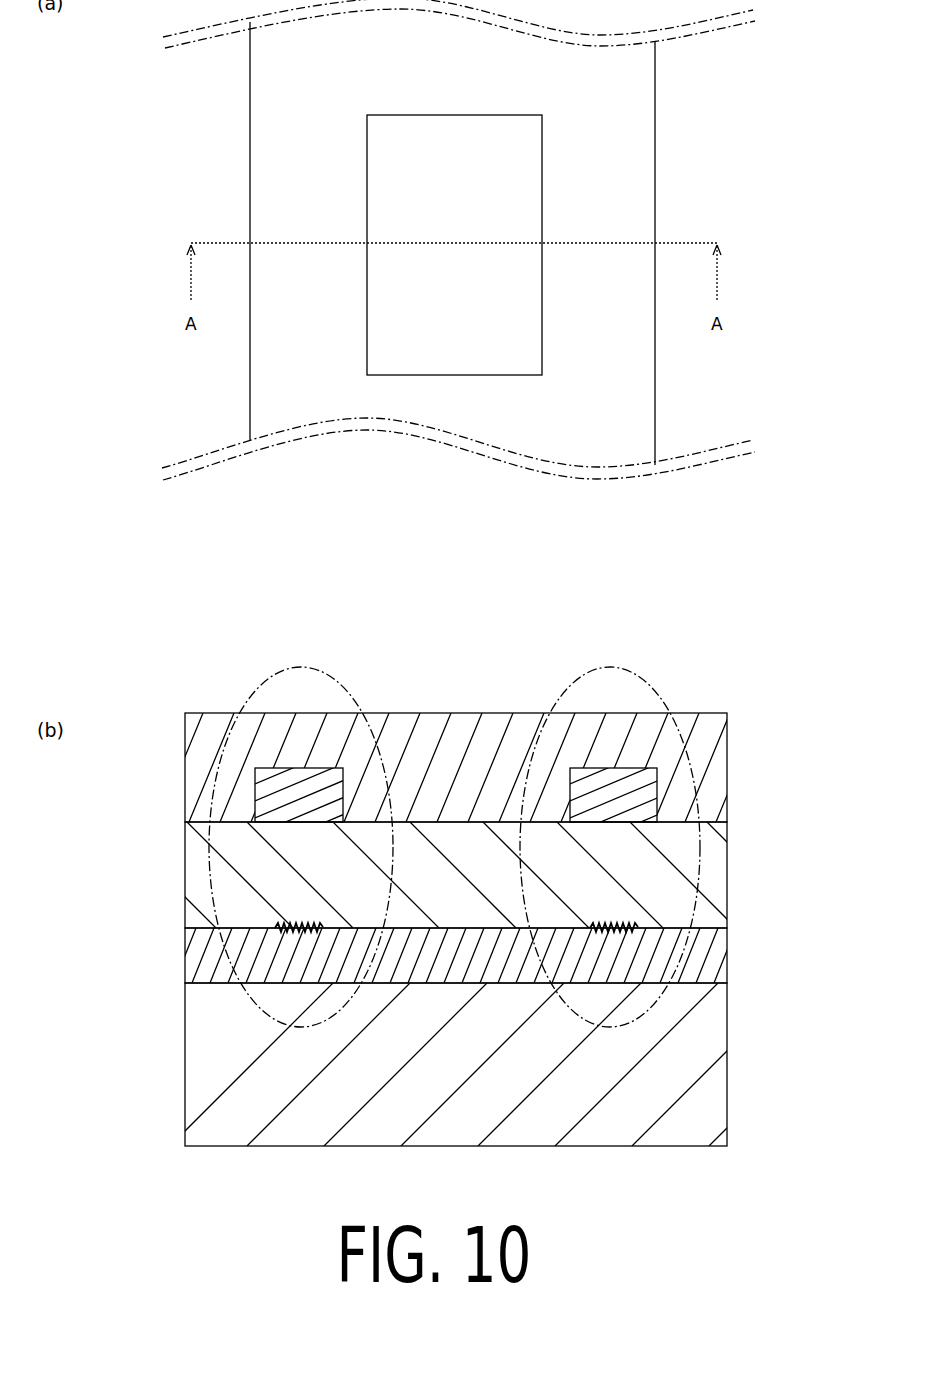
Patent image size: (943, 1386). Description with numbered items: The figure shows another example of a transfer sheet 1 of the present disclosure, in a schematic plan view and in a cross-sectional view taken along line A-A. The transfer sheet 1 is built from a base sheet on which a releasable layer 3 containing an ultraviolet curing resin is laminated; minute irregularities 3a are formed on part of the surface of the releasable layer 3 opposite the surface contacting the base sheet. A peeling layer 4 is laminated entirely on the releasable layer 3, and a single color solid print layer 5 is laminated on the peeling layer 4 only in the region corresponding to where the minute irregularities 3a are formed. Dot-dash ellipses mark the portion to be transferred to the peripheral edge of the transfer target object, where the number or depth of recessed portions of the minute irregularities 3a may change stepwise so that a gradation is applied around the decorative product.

The transfer sheet 1 is at (712, 98).
The releasable layer 3 is at (728, 953).
The minute irregularities 3a is at (300, 911).
The peeling layer 4 is at (728, 873).
The solid print layer 5 is at (660, 800).